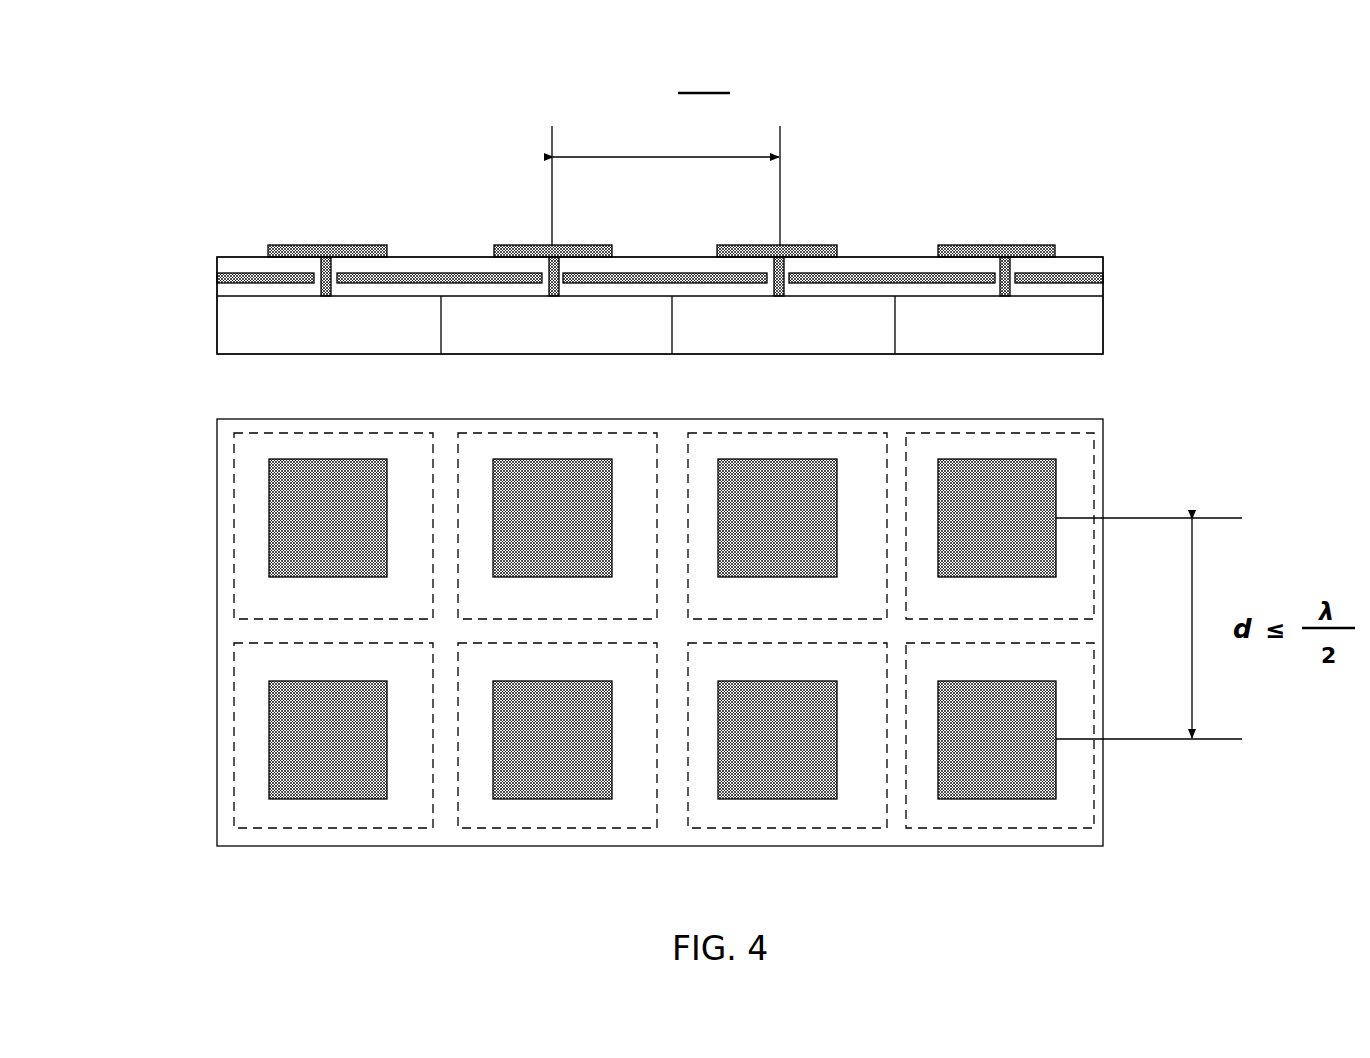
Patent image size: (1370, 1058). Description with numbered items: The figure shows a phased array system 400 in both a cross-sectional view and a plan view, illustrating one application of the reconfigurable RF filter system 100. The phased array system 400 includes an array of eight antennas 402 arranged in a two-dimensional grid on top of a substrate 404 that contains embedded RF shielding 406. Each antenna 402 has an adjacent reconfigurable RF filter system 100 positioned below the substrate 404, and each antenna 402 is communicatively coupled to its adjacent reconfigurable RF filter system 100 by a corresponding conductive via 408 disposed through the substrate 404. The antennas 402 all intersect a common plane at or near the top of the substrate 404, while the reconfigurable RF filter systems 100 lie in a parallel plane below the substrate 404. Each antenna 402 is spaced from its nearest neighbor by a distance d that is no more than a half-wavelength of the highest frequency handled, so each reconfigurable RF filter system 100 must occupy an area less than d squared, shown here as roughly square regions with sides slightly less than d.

The phased array system 400 is at (405, 145).
The antenna 402 is at (288, 245).
The substrate 404 is at (228, 260).
The RF shielding 406 is at (872, 272).
The conductive via 408 is at (1010, 267).
The reconfigurable RF filter system 100 is at (217, 440).